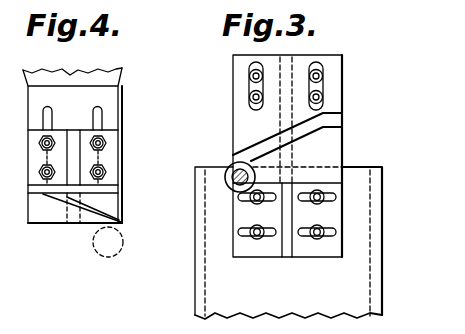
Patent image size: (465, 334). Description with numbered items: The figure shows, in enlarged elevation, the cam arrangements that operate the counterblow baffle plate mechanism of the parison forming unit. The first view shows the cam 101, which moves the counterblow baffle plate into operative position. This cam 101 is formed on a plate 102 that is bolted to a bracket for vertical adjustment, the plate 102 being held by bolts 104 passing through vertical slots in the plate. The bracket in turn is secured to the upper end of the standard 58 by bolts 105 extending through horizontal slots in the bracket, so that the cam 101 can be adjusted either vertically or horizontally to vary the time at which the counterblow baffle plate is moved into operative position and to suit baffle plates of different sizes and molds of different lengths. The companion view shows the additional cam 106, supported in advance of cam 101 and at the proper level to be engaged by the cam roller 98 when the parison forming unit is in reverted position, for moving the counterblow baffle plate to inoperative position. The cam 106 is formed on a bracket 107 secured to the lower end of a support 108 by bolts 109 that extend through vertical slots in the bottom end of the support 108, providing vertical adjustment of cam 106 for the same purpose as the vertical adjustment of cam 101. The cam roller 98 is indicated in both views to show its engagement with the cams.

In FIG. 3, the standard 58 is at (362, 230).
In FIG. 4, the cam roller 98 is at (98, 256).
In FIG. 3, the cam roller 98 is at (226, 187).
In FIG. 3, the cam 101 is at (303, 133).
In FIG. 3, the plate 102 is at (338, 92).
In FIG. 3, the bolts 104 is at (319, 74).
In FIG. 3, the bolts 105 is at (317, 242).
In FIG. 4, the cam 106 is at (72, 207).
In FIG. 4, the bracket 107 is at (116, 172).
In FIG. 4, the support 108 is at (108, 115).
In FIG. 4, the bolts 109 is at (110, 143).